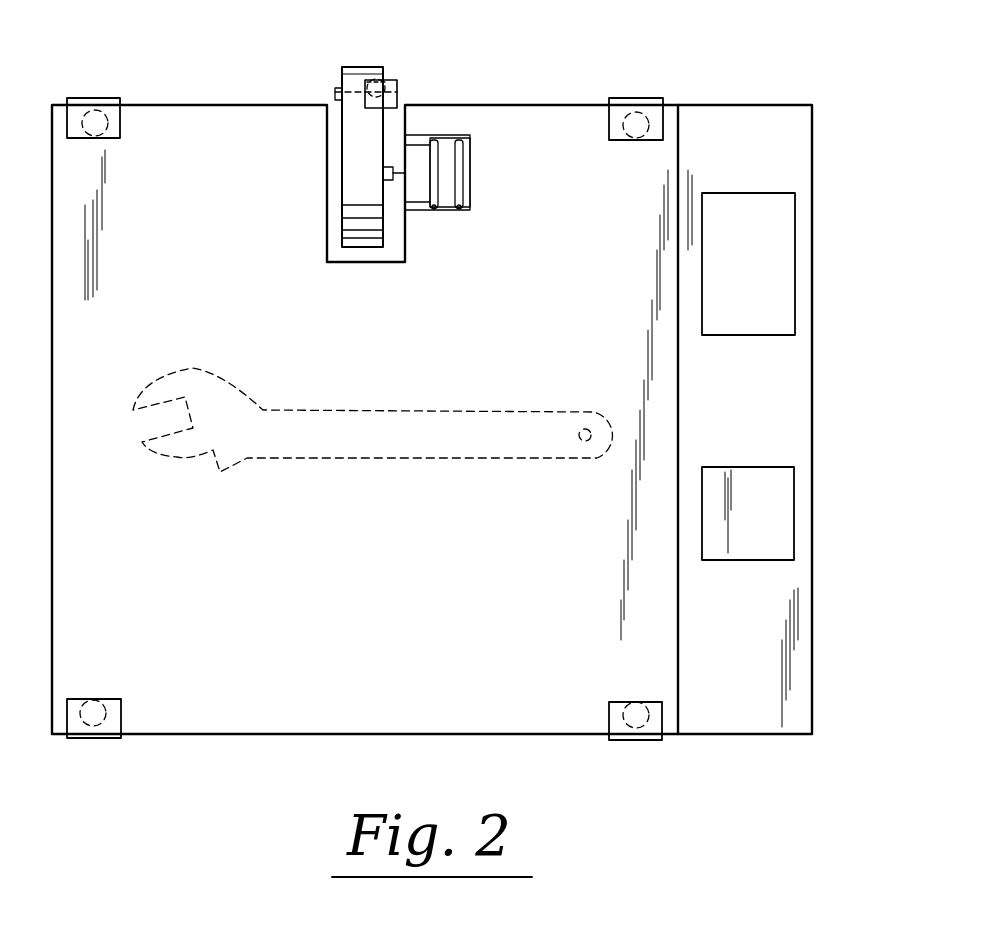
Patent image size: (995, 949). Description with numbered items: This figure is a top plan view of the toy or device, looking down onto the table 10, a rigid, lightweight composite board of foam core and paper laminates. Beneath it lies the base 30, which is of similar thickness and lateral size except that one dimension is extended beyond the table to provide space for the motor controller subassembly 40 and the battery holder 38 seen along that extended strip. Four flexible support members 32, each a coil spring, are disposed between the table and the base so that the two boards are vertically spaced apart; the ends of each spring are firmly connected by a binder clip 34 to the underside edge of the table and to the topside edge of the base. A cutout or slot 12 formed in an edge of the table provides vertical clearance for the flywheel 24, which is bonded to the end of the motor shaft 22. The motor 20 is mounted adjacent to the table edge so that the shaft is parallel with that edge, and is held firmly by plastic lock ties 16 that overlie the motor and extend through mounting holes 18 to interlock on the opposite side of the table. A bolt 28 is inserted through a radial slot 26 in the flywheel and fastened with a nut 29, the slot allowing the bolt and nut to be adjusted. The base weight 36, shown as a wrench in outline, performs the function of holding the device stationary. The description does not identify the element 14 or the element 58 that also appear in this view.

The table 10 is at (257, 104).
The cutout or slot 12 is at (342, 150).
The clamp body 14 is at (470, 180).
The plastic lock ties 16 is at (438, 167).
The mounting holes 18 is at (443, 213).
The motor 20 is at (412, 155).
The motor shaft 22 is at (387, 182).
The flywheel 24 is at (343, 228).
The radial slot 26 is at (362, 66).
The bolt 28 is at (382, 82).
The nut 29 is at (370, 63).
The base 30 is at (760, 661).
The flexible support members 32 is at (86, 112).
The binder clip 34 is at (117, 110).
The base weight 36 is at (337, 440).
The battery holder 38 is at (798, 509).
The motor controller subassembly 40 is at (798, 260).
The base plate 58 is at (257, 727).